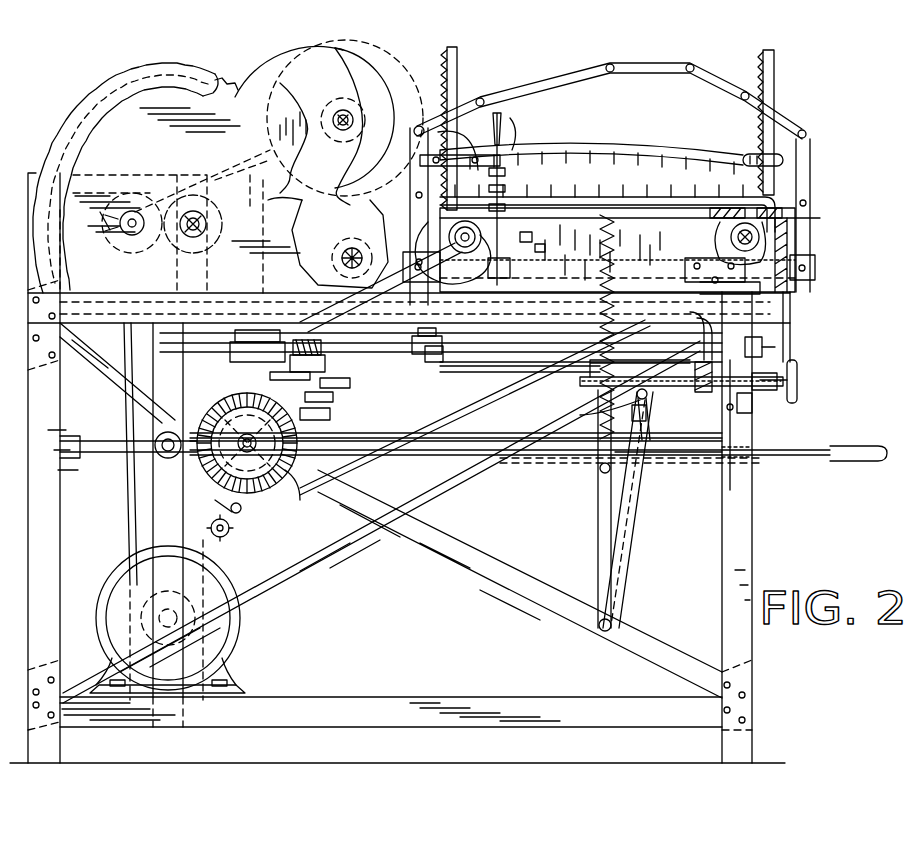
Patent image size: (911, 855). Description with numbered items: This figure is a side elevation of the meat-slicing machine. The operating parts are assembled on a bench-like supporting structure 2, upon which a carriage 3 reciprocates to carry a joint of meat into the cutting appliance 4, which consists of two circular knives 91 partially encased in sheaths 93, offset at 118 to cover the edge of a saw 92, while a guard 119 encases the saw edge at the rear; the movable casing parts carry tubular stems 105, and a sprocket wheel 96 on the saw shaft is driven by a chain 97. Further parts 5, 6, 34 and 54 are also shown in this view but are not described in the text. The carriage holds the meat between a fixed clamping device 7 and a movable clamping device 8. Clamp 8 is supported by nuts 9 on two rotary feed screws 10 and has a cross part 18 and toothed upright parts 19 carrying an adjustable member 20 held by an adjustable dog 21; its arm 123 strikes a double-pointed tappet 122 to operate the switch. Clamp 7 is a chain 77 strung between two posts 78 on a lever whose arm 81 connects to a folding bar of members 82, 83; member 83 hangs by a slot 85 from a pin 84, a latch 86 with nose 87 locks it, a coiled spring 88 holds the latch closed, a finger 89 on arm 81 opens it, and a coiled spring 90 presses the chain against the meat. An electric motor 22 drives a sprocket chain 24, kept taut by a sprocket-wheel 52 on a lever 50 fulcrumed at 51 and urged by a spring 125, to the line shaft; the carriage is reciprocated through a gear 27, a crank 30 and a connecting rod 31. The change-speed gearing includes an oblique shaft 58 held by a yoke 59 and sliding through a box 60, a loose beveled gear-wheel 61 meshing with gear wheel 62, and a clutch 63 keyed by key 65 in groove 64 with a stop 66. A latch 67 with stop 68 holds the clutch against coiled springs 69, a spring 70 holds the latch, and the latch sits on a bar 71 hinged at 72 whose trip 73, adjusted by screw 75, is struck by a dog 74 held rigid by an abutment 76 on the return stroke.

The supporting structure 2 is at (753, 492).
The carriage 3 is at (602, 252).
The cutting appliance 4 is at (440, 218).
The valve 5 is at (529, 243).
The valve 6 is at (543, 246).
The clamping device 7 is at (783, 120).
The clamping device 8 is at (652, 146).
The nuts 9 is at (730, 235).
The feed screws 10 is at (760, 232).
The cross part 18 is at (667, 196).
The upright parts 19 is at (458, 70).
The adjustable member 20 is at (712, 150).
The adjustable dog 21 is at (422, 125).
The electric motor 22 is at (240, 633).
The sprocket chain 24 is at (122, 508).
The gear 27 is at (456, 427).
The crank 30 is at (430, 354).
The connecting rod 31 is at (520, 359).
The shaft 34 is at (805, 448).
The lever 50 is at (240, 520).
The fulcrum 51 is at (242, 508).
The sprocket-wheel 52 is at (230, 533).
The valve stem 54 is at (512, 120).
The oblique shaft 58 is at (340, 378).
The yoke 59 is at (452, 356).
The box 60 is at (170, 458).
The beveled gear-wheel 61 is at (330, 474).
The gear wheel 62 is at (262, 492).
The clutch 63 is at (340, 395).
The groove 64 is at (352, 265).
The key 65 is at (307, 347).
The stop 66 is at (328, 412).
The latch 67 is at (342, 486).
The stop 68 is at (250, 330).
The coiled springs 69 is at (282, 330).
The spring 70 is at (298, 495).
The bar 71 is at (478, 360).
The hinge 72 is at (765, 400).
The trip 73 is at (690, 312).
The dog 74 is at (730, 288).
The screw 75 is at (798, 368).
The abutment 76 is at (685, 272).
The chain 77 is at (640, 63).
The posts 78 is at (412, 240).
The arm 81 is at (598, 394).
The member 82 is at (597, 492).
The member 83 is at (635, 494).
The pin 84 is at (650, 410).
The slot 85 is at (665, 457).
The latch 86 is at (648, 420).
The nose 87 is at (580, 411).
The coiled spring 88 is at (650, 396).
The finger 89 is at (681, 376).
The coiled spring 90 is at (605, 340).
The circular knives 91 is at (370, 75).
The saw 92 is at (228, 84).
The sheaths 93 is at (318, 50).
The sprocket wheel 96 is at (131, 230).
The chain 97 is at (142, 337).
The tubular stem 105 is at (220, 172).
The offset 118 is at (335, 110).
The guard 119 is at (125, 178).
The tappet 122 is at (775, 342).
The arm 123 is at (790, 300).
The spring 125 is at (203, 536).